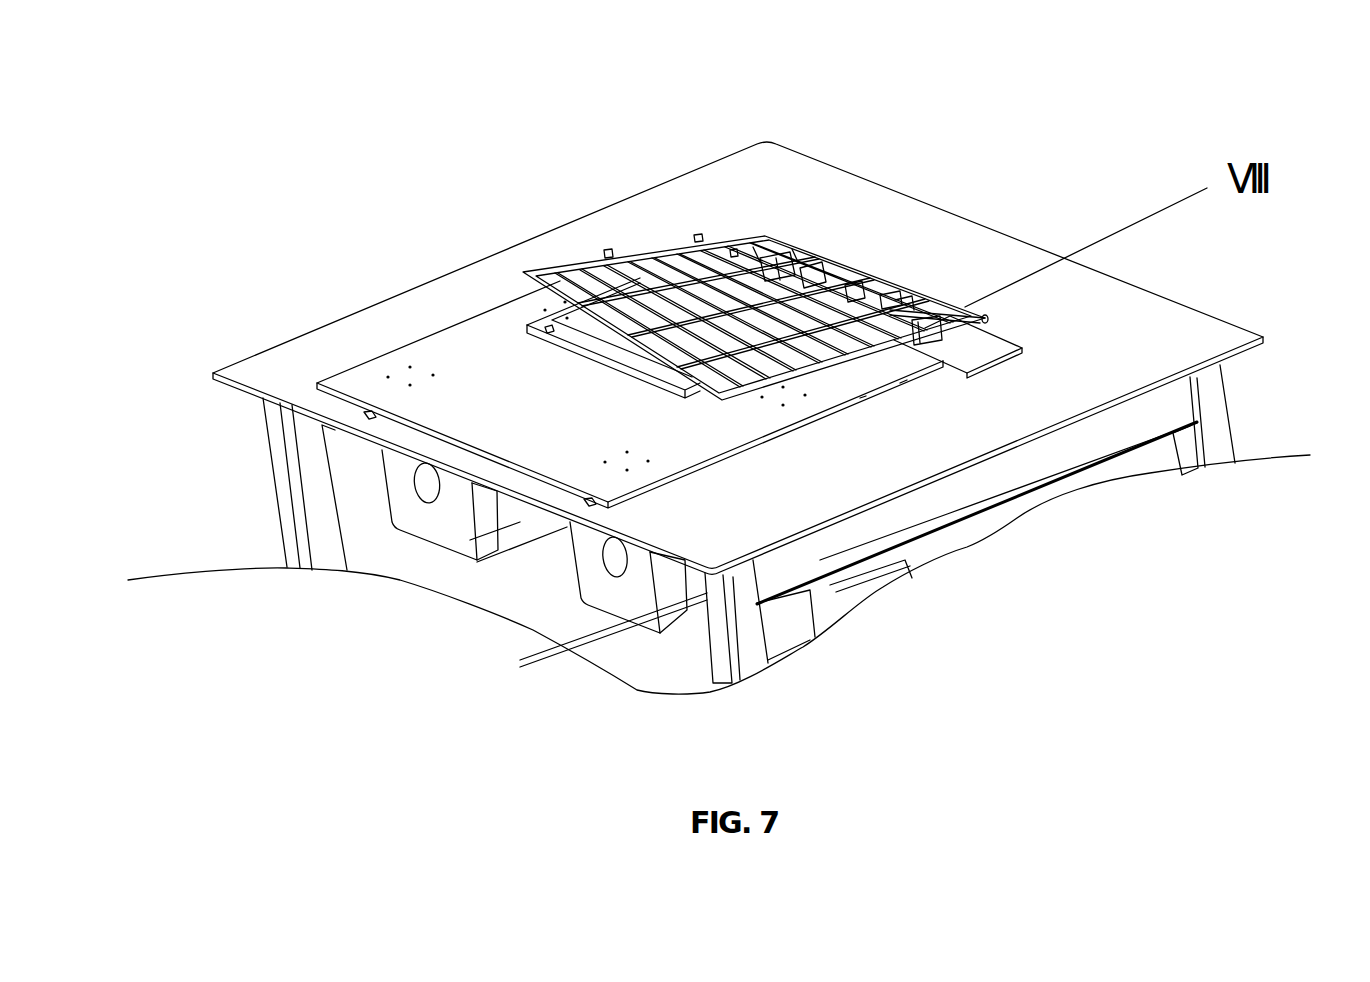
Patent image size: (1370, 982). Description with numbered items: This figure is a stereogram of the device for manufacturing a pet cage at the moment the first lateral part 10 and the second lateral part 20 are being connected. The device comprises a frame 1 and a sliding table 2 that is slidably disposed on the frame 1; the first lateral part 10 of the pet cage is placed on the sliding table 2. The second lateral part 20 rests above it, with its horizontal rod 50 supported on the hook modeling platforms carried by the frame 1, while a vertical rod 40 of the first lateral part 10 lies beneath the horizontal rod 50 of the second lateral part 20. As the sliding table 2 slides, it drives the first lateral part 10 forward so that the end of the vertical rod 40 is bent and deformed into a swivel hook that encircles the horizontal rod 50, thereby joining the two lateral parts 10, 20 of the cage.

The frame 1 is at (993, 272).
The sliding table 2 is at (388, 368).
The first lateral part 10 is at (610, 320).
The second lateral part 20 is at (632, 253).
The vertical rod 40 is at (750, 278).
The horizontal rod 50 is at (860, 288).